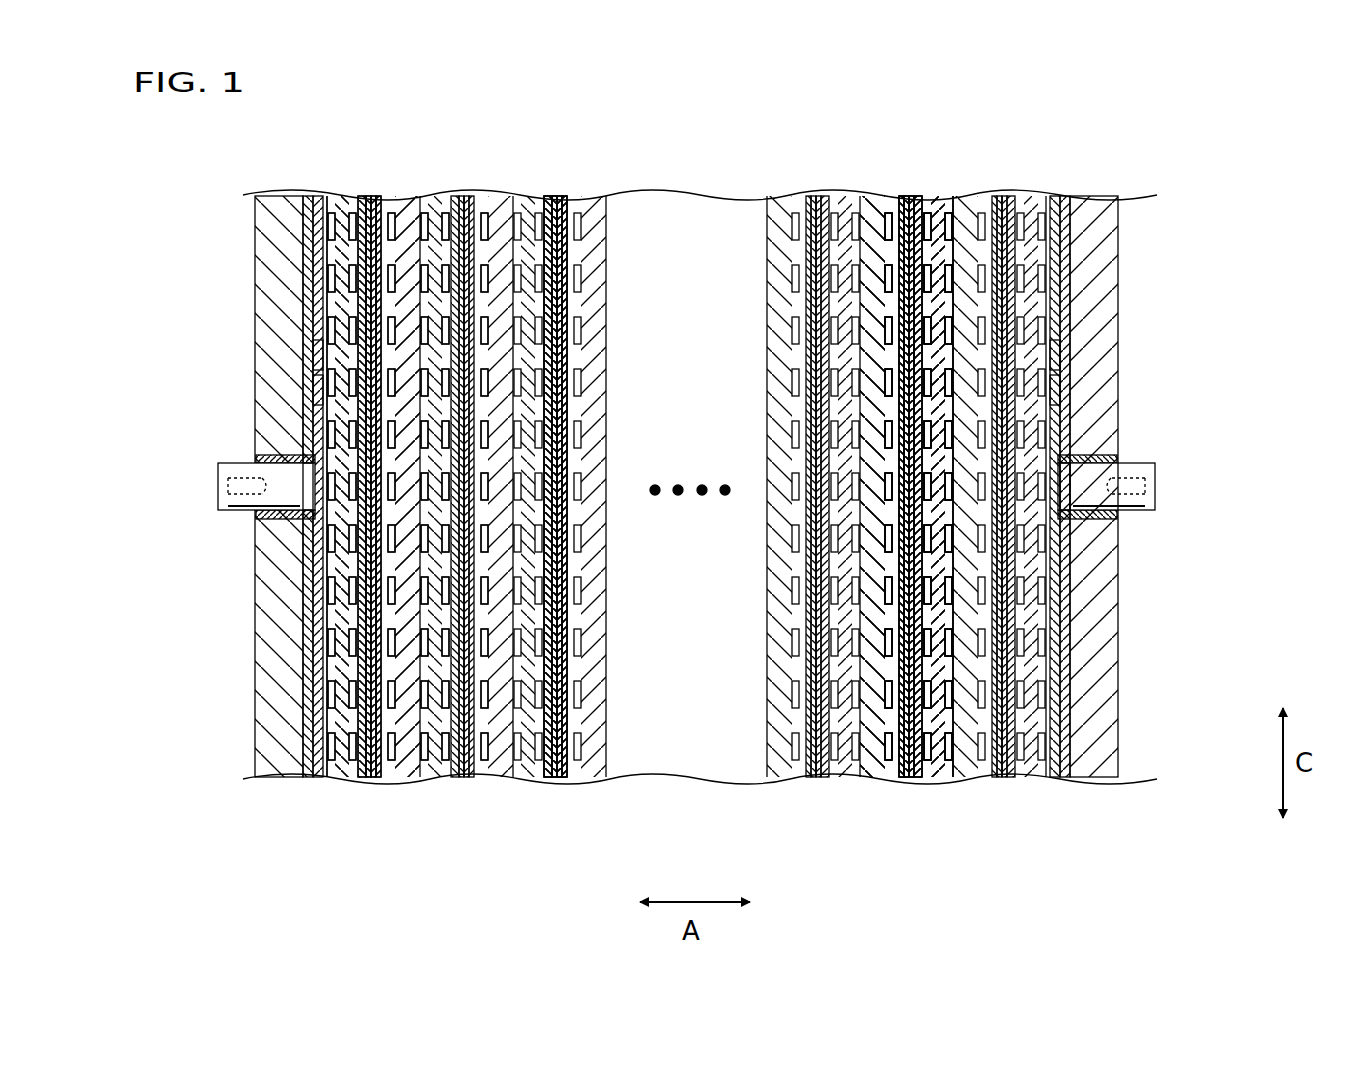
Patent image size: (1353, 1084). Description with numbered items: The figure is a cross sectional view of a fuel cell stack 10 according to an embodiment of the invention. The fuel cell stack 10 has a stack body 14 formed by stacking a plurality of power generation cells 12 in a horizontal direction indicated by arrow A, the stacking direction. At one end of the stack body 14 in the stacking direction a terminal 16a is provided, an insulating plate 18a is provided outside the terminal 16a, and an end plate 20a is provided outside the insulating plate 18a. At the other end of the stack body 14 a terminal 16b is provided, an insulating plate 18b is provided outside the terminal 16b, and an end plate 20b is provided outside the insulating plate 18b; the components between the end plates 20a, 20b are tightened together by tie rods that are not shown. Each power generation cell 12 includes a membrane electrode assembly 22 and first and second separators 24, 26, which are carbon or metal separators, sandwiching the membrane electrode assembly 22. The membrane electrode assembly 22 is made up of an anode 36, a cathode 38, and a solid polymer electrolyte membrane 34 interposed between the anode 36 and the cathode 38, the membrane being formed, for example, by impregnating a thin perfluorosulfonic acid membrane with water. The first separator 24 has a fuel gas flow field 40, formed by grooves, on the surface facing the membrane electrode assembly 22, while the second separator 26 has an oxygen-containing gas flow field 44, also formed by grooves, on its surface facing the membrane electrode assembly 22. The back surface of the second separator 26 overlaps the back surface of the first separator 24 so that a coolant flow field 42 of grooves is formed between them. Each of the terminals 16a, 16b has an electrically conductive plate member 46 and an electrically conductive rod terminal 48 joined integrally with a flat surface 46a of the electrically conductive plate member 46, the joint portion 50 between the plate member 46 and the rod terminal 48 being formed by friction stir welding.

The fuel cell stack 10 is at (912, 85).
The power generation cell 12 is at (409, 175).
The stack body 14 is at (668, 93).
The terminal 16a is at (1051, 191).
The terminal 16b is at (318, 191).
The insulating plate 18a is at (1064, 191).
The insulating plate 18b is at (306, 191).
The end plate 20a is at (1101, 268).
The end plate 20b is at (272, 270).
The membrane electrode assembly 22 is at (618, 840).
The first separator 24 is at (940, 782).
The second separator 26 is at (878, 782).
The solid polymer electrolyte membrane 34 is at (558, 782).
The anode 36 is at (566, 782).
The cathode 38 is at (550, 782).
The fuel gas flow field 40 is at (455, 632).
The coolant flow field 42 is at (425, 592).
The oxygen-containing gas flow field 44 is at (488, 690).
The electrically conductive plate member 46 is at (323, 358).
The flat surface 46a is at (320, 390).
The electrically conductive rod terminal 48 is at (242, 480).
The joint portion 50 is at (307, 488).